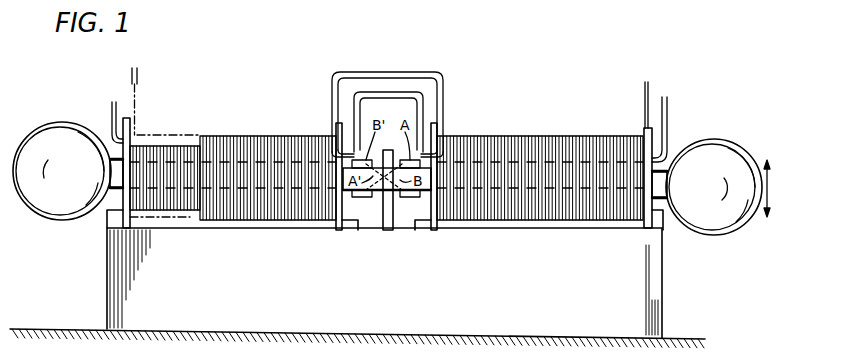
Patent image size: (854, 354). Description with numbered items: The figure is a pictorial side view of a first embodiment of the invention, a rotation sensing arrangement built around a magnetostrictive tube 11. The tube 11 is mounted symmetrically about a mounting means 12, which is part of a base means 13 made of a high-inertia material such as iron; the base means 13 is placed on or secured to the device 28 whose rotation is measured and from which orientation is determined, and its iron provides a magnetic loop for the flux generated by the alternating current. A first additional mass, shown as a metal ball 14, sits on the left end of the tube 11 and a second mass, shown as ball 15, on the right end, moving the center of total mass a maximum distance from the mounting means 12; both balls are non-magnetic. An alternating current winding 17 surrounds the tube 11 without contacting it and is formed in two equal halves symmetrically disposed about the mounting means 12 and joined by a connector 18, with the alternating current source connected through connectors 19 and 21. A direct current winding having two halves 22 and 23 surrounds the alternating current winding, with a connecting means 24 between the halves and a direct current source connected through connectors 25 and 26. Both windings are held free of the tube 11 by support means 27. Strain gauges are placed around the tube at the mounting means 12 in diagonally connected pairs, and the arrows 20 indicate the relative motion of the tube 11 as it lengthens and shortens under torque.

The magnetostrictive tube 11 is at (110, 152).
The mounting means 12 is at (390, 211).
The base means 13 is at (309, 287).
The metal ball 14 is at (63, 165).
The ball 15 is at (717, 176).
The alternating current winding 17 is at (172, 146).
The connector 18 is at (397, 92).
The connector 19 is at (112, 104).
The arrows 20 is at (769, 164).
The connector 21 is at (667, 100).
The direct current winding half 22 is at (256, 136).
The direct current winding half 23 is at (498, 136).
The connecting means 24 is at (364, 72).
The connector 25 is at (138, 80).
The connector 26 is at (644, 96).
The support means 27 is at (112, 222).
The device 28 is at (82, 329).